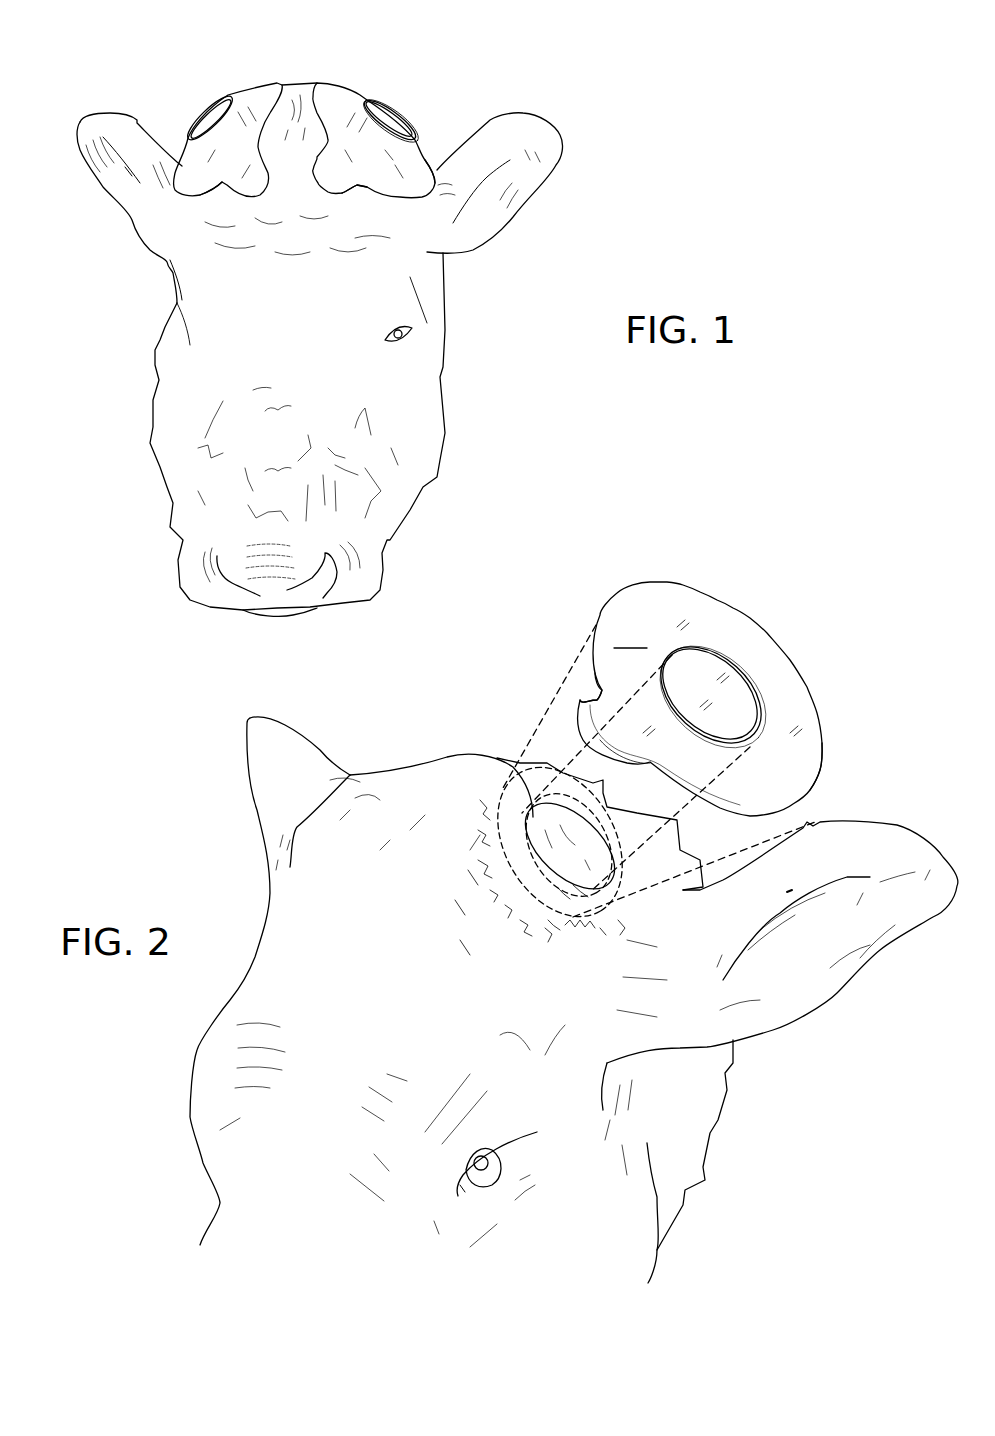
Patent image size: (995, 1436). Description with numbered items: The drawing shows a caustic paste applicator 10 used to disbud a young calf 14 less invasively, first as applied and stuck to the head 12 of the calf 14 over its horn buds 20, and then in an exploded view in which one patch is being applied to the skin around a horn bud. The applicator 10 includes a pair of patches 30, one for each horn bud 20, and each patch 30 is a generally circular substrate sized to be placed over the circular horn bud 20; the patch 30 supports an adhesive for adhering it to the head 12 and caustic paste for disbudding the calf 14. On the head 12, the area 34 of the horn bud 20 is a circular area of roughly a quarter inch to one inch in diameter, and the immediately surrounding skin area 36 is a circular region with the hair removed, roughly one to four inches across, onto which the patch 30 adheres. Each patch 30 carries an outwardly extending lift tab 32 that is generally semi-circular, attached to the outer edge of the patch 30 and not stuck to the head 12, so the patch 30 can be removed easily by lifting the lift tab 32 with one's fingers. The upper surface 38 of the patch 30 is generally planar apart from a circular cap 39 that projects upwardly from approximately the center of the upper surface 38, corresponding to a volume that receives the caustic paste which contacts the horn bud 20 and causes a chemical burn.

In FIG. 1, the caustic paste applicator 10 is at (222, 196).
In FIG. 2, the caustic paste applicator 10 is at (846, 760).
In FIG. 1, the head 12 is at (207, 300).
In FIG. 2, the head 12 is at (557, 927).
In FIG. 1, the calf 14 is at (137, 275).
In FIG. 2, the calf 14 is at (574, 1000).
In FIG. 1, the horn buds 20 is at (203, 120).
In FIG. 2, the horn buds 20 is at (536, 801).
In FIG. 1, the patch 30 is at (285, 76).
In FIG. 2, the patch 30 is at (800, 710).
In FIG. 1, the lift tab 32 is at (410, 258).
In FIG. 2, the lift tab 32 is at (598, 688).
In FIG. 1, the area of the horn bud 34 is at (410, 128).
In FIG. 2, the area of the horn bud 34 is at (585, 895).
In FIG. 1, the immediately surrounding skin area 36 is at (436, 153).
In FIG. 2, the immediately surrounding skin area 36 is at (567, 897).
In FIG. 2, the upper surface 38 is at (625, 751).
In FIG. 2, the circular cap 39 is at (686, 668).